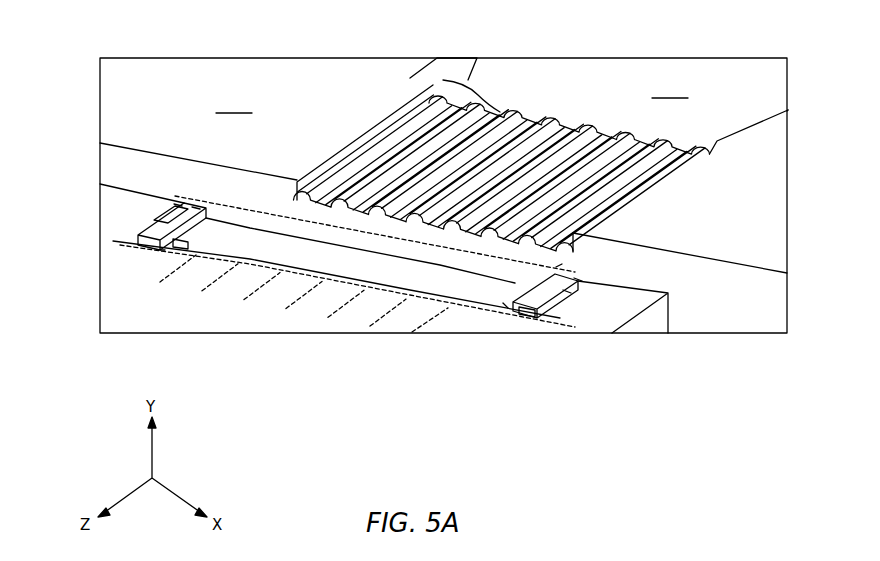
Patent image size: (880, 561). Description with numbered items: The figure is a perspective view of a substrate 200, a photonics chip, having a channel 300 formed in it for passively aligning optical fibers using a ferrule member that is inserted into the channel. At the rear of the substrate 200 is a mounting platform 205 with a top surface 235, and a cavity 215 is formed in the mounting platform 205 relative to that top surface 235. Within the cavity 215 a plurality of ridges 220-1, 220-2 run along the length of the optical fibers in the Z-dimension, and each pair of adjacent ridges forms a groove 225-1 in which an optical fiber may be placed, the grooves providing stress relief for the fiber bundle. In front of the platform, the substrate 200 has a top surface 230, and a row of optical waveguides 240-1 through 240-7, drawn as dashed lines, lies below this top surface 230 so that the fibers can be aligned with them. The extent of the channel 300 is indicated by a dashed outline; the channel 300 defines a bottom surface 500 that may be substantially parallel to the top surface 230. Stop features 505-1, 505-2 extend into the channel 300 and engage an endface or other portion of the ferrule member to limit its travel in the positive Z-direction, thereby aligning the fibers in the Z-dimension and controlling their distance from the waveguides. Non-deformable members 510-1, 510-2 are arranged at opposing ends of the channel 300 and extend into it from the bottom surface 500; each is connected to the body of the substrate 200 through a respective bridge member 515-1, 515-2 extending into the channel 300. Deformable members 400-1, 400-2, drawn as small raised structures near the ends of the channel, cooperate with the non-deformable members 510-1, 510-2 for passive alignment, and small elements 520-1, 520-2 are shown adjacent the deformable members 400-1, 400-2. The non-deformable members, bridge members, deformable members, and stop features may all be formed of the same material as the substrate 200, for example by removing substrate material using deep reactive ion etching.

The substrate 200 is at (103, 316).
The mounting platform 205 is at (743, 148).
The cavity 215 is at (720, 117).
The ridge 220-1 is at (350, 162).
The ridge 220-2 is at (400, 160).
The groove 225-1 is at (476, 84).
The top surface 230 is at (135, 320).
The top surface 235 is at (443, 189).
The optical waveguide 240-1 is at (160, 282).
The optical waveguide 240-7 is at (413, 320).
The channel 300 is at (556, 267).
The deformable member 400-1 is at (146, 235).
The deformable member 400-2 is at (518, 305).
The bottom surface 500 is at (250, 252).
The stop feature 505-1 is at (163, 249).
The stop feature 505-2 is at (508, 308).
The non-deformable member 510-1 is at (196, 207).
The non-deformable member 510-2 is at (568, 292).
The bridge member 515-1 is at (178, 204).
The bridge member 515-2 is at (578, 279).
The bump 520-1 is at (140, 240).
The bump 520-2 is at (536, 308).